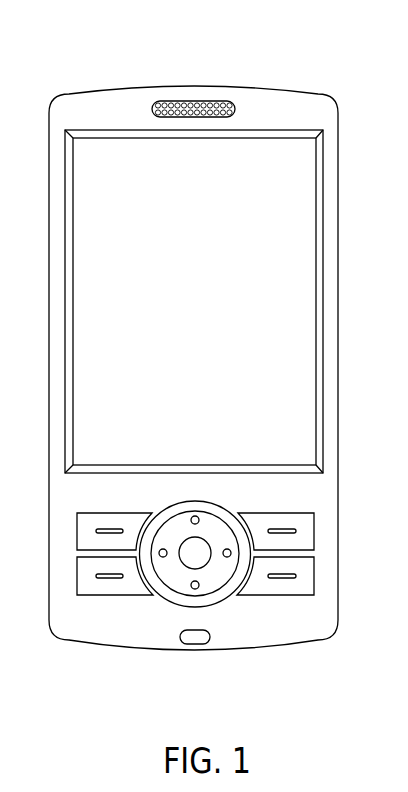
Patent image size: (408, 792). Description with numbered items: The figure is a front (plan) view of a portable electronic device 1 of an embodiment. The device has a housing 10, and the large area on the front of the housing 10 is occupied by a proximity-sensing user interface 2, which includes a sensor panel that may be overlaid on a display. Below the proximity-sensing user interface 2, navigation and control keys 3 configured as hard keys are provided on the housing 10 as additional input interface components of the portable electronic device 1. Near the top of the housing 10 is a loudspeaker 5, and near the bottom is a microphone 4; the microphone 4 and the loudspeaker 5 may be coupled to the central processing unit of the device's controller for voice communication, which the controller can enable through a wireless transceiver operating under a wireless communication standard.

The portable electronic device 1 is at (59, 74).
The proximity-sensing user interface 2 is at (307, 180).
The navigation and control keys 3 is at (120, 634).
The microphone 4 is at (197, 645).
The loudspeaker 5 is at (195, 100).
The housing 10 is at (278, 632).